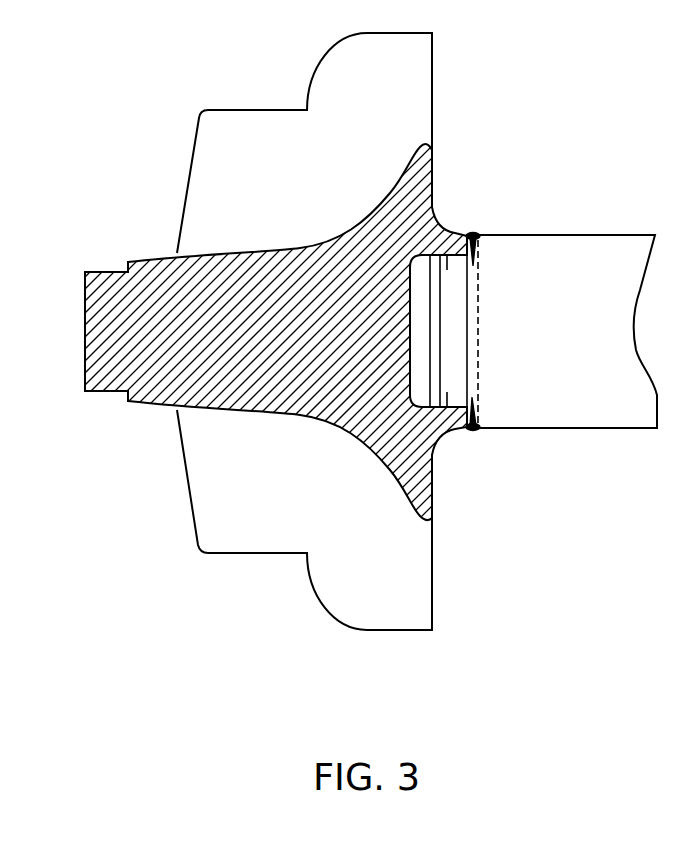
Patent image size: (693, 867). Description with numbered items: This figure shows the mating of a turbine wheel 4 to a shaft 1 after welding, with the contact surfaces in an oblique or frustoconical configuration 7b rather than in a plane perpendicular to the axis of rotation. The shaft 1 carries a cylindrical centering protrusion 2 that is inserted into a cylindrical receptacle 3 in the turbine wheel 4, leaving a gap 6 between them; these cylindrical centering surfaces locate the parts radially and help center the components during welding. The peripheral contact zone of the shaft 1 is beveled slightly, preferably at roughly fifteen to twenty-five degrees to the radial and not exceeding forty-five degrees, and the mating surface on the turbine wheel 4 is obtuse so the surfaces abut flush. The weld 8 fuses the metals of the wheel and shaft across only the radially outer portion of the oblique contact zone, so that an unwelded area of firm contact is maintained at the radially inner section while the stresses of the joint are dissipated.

The shaft 1 is at (607, 258).
The cylindrical centering protrusion 2 is at (455, 232).
The cylindrical receptacle 3 is at (432, 437).
The turbine wheel 4 is at (422, 183).
The gap 6 is at (440, 390).
The frustoconical configuration 7b is at (471, 242).
The weld 8 is at (470, 421).